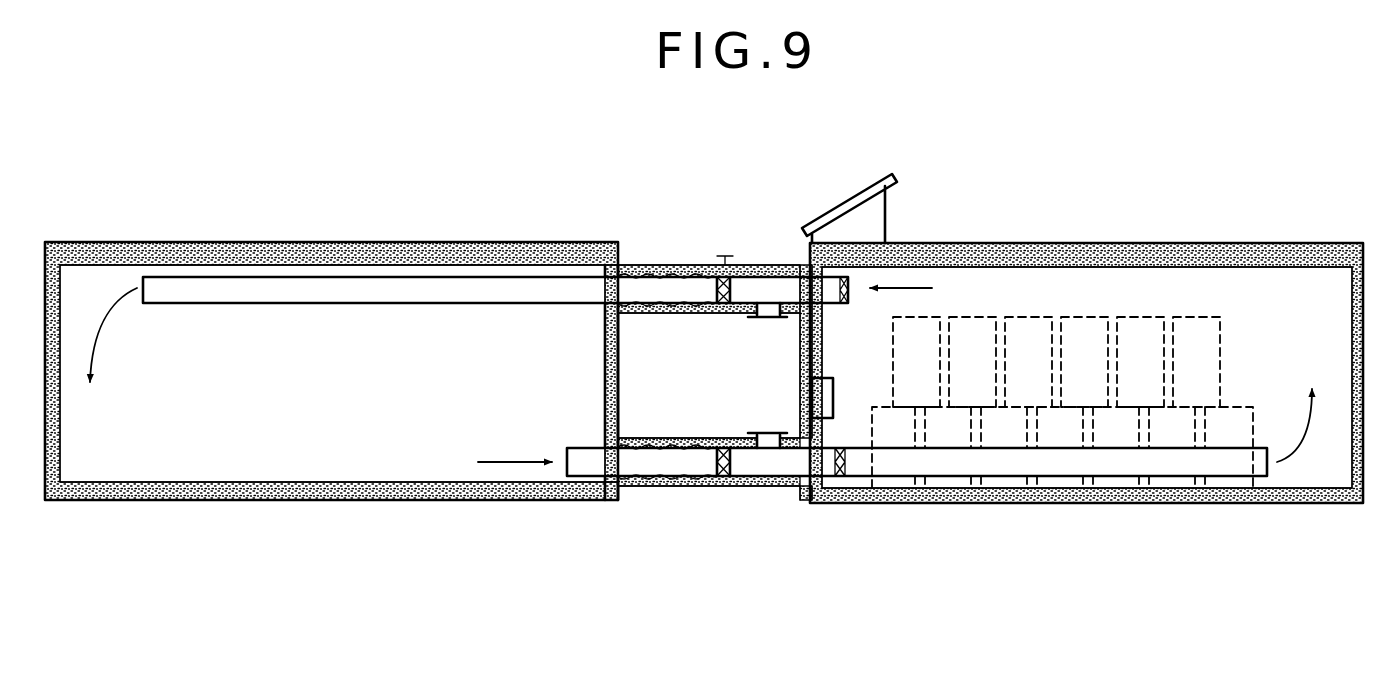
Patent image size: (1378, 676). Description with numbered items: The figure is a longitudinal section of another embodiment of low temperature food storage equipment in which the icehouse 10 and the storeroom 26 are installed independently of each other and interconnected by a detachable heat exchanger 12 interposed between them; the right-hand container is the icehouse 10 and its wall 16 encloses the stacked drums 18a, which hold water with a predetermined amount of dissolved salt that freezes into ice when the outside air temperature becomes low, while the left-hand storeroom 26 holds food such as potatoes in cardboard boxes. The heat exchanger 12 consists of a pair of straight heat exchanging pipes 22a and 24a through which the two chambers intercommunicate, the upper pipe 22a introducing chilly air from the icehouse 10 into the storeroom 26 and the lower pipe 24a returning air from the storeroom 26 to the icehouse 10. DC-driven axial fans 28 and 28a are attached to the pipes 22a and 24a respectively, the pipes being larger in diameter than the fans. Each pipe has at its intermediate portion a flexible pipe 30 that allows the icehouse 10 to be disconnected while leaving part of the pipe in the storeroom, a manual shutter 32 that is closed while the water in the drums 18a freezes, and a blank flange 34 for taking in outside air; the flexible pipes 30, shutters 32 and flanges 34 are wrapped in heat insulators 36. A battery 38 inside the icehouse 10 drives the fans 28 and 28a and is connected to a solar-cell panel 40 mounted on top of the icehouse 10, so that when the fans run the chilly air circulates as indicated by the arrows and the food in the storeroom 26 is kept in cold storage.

The icehouse 10 is at (1184, 518).
The heat exchanger 12 is at (691, 262).
The second container 16 is at (1060, 244).
The drums 18a is at (1191, 317).
The heat exchanging pipe 22a is at (651, 262).
The heat exchanging pipe 24a is at (695, 437).
The storeroom 26 is at (505, 244).
The axial fan 28 is at (843, 305).
The axial fan 28a is at (842, 486).
The flexible pipe 30 is at (657, 313).
The manual shutter 32 is at (722, 313).
The blank flange 34 is at (770, 321).
The heat insulator 36 is at (762, 264).
The battery 38 is at (833, 394).
The solar-cell panel 40 is at (876, 180).